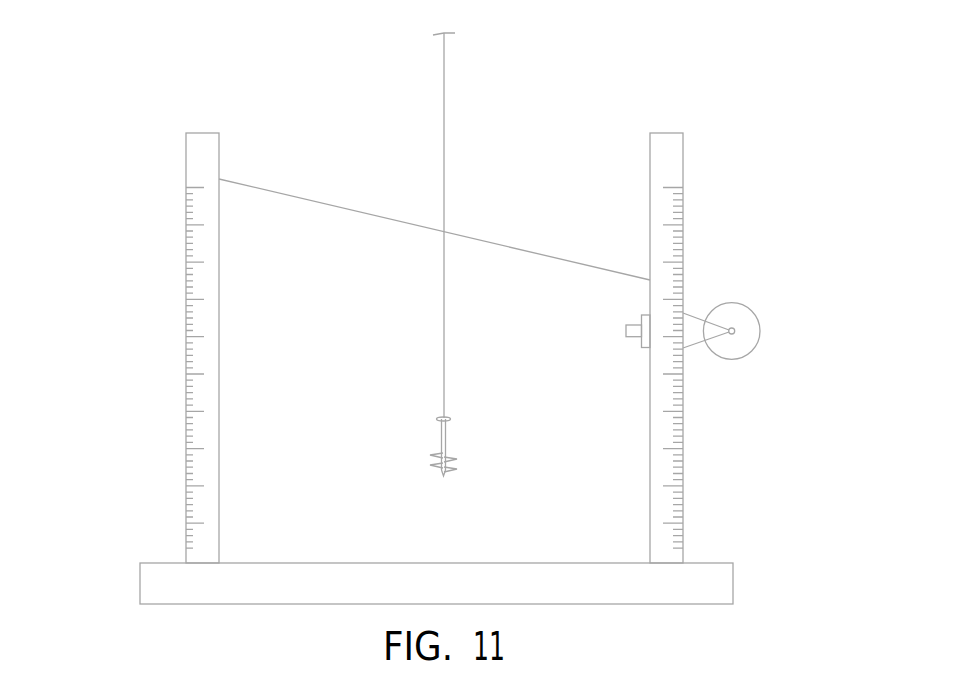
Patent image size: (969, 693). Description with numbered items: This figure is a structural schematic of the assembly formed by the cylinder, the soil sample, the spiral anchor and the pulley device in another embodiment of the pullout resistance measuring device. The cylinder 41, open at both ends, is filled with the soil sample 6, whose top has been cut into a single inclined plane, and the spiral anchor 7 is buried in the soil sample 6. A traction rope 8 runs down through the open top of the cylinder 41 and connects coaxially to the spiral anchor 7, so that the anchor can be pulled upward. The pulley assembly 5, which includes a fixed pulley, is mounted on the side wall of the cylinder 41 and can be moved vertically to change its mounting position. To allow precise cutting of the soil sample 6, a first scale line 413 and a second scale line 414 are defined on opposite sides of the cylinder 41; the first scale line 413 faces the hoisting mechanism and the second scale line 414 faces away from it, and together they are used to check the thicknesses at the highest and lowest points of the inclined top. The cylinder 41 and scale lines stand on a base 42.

The cylinder 41 is at (186, 157).
The second scale line 414 is at (186, 313).
The first scale line 413 is at (683, 469).
The base plate 42 is at (175, 588).
The traction rope 8 is at (444, 140).
The soil sample 6 is at (538, 253).
The spiral anchor 7 is at (443, 445).
The pulley assembly 5 is at (708, 302).